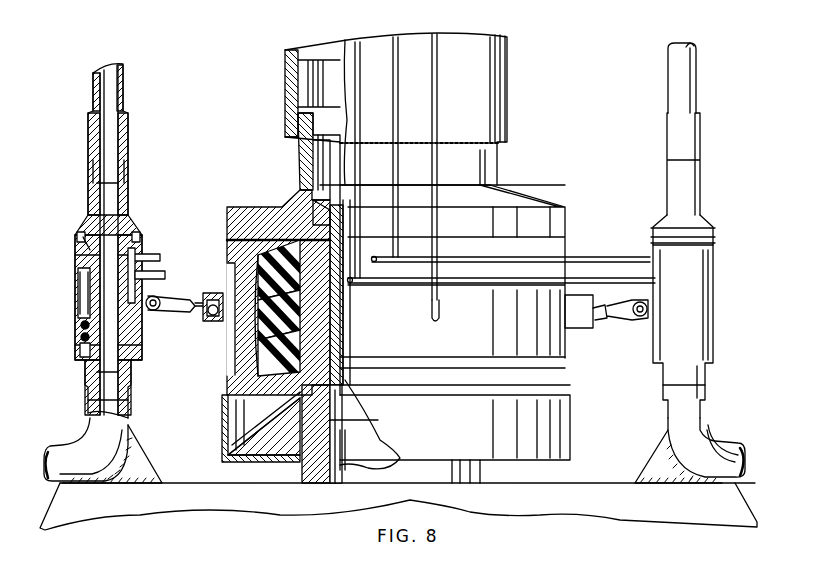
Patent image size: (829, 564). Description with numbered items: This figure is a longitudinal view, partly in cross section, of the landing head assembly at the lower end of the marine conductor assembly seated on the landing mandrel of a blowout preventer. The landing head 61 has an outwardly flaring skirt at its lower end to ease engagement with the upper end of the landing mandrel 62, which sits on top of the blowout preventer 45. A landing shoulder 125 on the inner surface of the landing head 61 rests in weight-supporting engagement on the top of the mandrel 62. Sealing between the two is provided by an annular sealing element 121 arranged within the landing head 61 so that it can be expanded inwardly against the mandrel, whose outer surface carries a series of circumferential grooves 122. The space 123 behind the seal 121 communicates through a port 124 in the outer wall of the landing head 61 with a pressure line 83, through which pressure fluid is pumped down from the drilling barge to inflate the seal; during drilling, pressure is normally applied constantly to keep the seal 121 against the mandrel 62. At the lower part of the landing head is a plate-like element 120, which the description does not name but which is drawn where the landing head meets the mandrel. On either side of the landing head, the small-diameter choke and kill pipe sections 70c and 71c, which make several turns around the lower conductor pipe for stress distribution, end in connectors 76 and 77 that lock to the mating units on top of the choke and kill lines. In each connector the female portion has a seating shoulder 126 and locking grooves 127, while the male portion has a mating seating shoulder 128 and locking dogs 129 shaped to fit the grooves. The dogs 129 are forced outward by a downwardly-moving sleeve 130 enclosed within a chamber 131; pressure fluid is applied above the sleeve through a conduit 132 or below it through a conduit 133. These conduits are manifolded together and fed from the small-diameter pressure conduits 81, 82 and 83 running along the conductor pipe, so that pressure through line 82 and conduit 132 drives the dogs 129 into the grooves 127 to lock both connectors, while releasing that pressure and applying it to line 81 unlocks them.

The blowout preventer 45 is at (282, 510).
The landing head 61 is at (457, 425).
The landing mandrel 62 is at (313, 469).
The small-diameter pipe section 70c is at (129, 135).
The small-diameter pipe section 71c is at (694, 89).
The connector 76 is at (133, 225).
The connector 77 is at (704, 223).
The pressure conduit 81 is at (358, 84).
The pressure conduit 82 is at (397, 94).
The pressure conduit 83 is at (438, 106).
The mounting plate 120 is at (248, 462).
The sealing element 121 is at (262, 331).
The circumferential grooves 122 is at (300, 313).
The space 123 is at (262, 300).
The port 124 is at (434, 321).
The landing shoulder 125 is at (300, 198).
The seating shoulder 126 is at (80, 327).
The locking grooves 127 is at (80, 339).
The mating seating shoulder 128 is at (79, 311).
The locking dogs 129 is at (82, 351).
The sleeve 130 is at (77, 277).
The chamber 131 is at (82, 257).
The conduit 132 is at (150, 254).
The conduit 133 is at (160, 279).